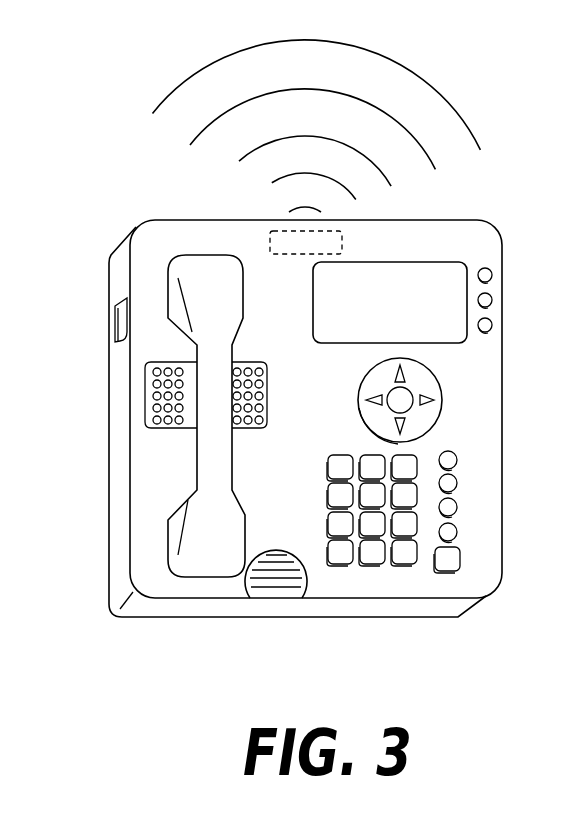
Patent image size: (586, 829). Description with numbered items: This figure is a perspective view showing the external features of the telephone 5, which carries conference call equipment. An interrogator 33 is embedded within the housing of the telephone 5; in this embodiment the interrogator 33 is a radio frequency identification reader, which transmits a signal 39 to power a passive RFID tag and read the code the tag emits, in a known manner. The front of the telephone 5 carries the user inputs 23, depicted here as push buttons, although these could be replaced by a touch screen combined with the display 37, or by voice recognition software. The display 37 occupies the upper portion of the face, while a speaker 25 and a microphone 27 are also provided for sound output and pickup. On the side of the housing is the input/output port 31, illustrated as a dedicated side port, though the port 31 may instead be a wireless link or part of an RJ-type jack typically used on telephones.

The telephone 5 is at (505, 363).
The user inputs 23 is at (457, 530).
The speaker 25 is at (268, 392).
The microphone 27 is at (307, 582).
The input/output port 31 is at (118, 325).
The interrogator 33 is at (270, 240).
The display 37 is at (418, 262).
The signal 39 is at (445, 100).